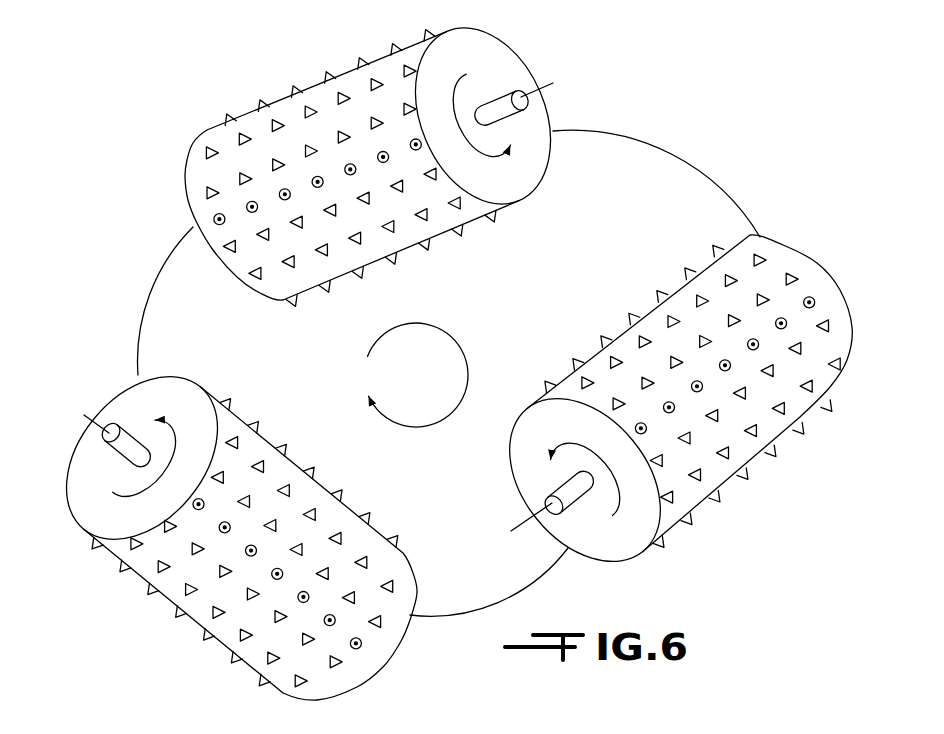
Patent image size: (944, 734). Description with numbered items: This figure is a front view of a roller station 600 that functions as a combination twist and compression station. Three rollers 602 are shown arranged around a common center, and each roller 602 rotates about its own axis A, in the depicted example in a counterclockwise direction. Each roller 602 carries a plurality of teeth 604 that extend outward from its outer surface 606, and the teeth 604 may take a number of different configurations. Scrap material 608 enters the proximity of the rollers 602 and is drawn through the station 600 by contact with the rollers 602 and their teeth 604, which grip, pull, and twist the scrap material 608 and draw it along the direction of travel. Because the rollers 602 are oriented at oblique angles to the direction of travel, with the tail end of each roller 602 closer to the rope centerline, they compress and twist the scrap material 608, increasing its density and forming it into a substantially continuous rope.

The roller station 600 is at (452, 353).
The roller 602 is at (496, 60).
The teeth 604 is at (259, 102).
The outer surface 606 is at (206, 173).
The scrap material 608 is at (647, 170).